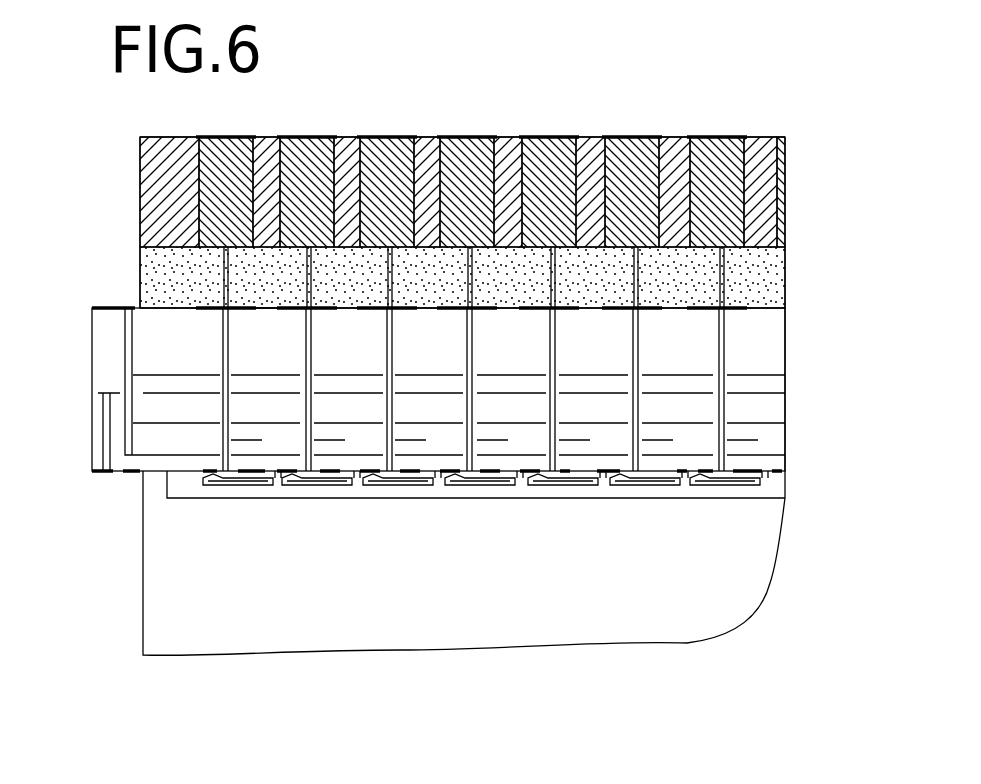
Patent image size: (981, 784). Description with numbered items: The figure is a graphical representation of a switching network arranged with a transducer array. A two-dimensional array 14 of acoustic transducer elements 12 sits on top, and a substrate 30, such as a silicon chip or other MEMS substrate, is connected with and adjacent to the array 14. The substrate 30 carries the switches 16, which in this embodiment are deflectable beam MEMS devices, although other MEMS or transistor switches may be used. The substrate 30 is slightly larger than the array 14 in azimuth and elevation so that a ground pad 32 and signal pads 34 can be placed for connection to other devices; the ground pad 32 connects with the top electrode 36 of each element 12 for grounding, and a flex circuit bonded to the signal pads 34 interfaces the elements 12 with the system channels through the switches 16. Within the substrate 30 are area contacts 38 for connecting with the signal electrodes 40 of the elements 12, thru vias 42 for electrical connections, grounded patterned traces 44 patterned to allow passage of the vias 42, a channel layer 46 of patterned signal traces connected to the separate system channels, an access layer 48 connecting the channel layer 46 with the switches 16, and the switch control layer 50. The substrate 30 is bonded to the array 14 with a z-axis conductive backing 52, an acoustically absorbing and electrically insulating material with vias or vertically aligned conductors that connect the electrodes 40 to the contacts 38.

The acoustic transducer elements 12 is at (293, 135).
The two-dimensional array 14 is at (793, 189).
The switches 16 is at (313, 488).
The substrate 30 is at (797, 370).
The ground pad 32 is at (100, 305).
The signal pads 34 is at (114, 478).
The top electrode 36 is at (200, 137).
The area contacts 38 is at (283, 313).
The signal electrodes 40 is at (285, 254).
The thru vias 42 is at (727, 342).
The grounded patterned traces 44 is at (104, 377).
The channel layer 46 is at (90, 396).
The access layer 48 is at (123, 426).
The switch control layer 50 is at (795, 470).
The z-axis conductive backing 52 is at (787, 280).